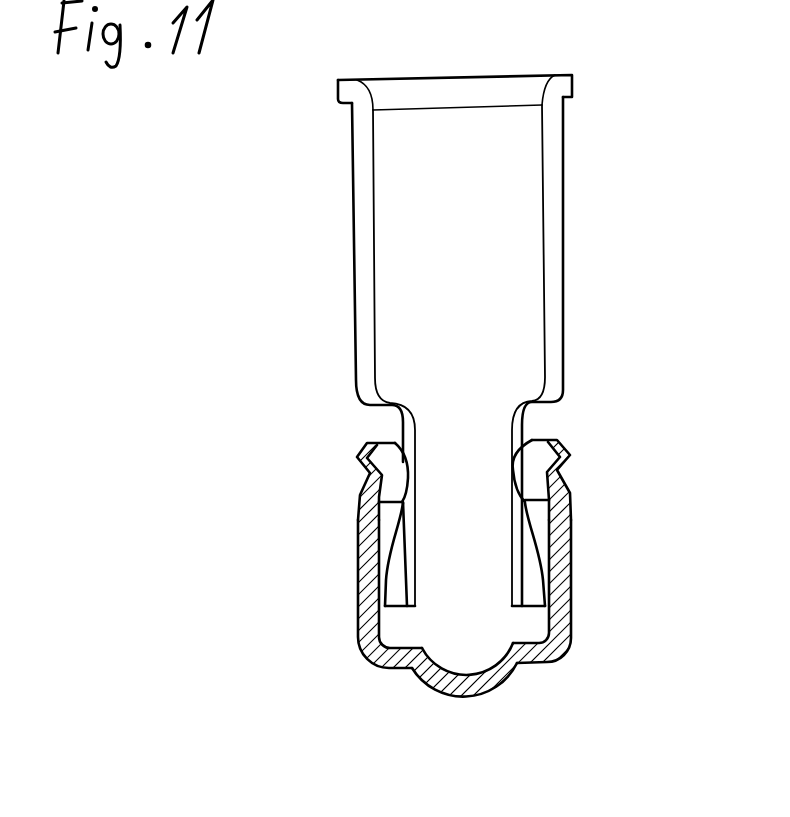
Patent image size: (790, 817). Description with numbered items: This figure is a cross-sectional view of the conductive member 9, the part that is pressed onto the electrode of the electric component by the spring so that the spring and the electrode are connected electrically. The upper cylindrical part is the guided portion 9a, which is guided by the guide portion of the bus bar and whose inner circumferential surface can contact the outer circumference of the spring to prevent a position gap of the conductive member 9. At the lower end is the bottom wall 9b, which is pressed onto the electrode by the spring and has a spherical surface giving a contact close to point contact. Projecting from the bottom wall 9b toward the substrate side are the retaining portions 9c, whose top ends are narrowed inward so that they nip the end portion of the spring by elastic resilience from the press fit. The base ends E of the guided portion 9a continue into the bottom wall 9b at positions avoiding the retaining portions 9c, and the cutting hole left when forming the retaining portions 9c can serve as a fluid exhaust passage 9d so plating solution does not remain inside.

The conductive member 9 is at (490, 340).
The guided portion 9a is at (620, 152).
The bottom wall 9b is at (531, 690).
The retaining portion 9c is at (501, 480).
The fluid exhaust passage 9d is at (508, 355).
The base end E is at (437, 586).